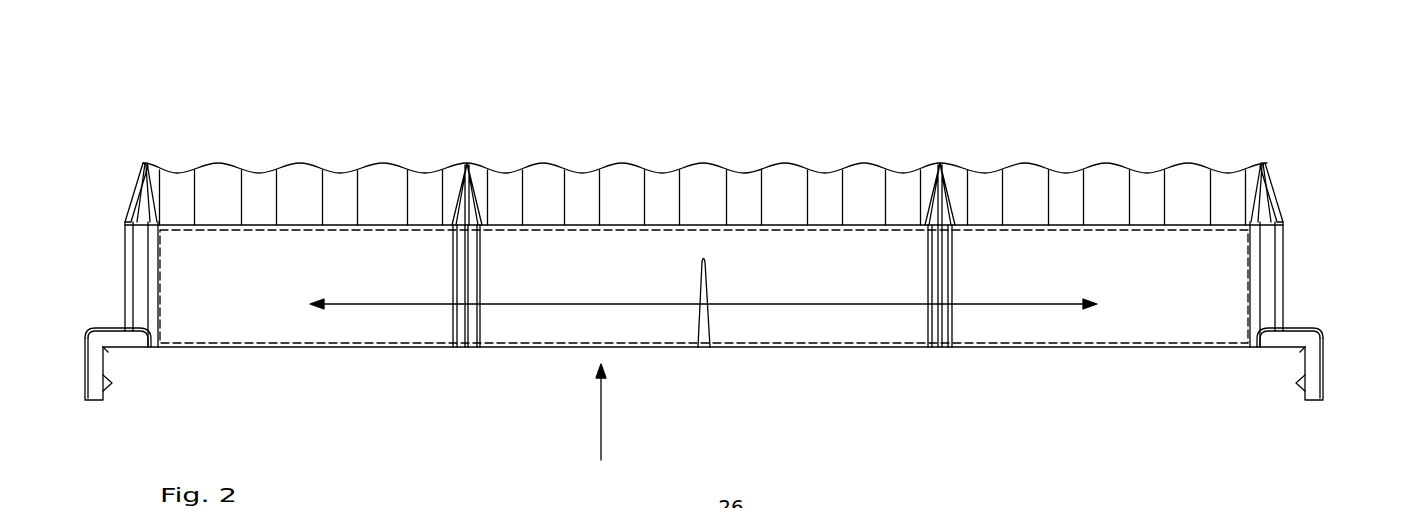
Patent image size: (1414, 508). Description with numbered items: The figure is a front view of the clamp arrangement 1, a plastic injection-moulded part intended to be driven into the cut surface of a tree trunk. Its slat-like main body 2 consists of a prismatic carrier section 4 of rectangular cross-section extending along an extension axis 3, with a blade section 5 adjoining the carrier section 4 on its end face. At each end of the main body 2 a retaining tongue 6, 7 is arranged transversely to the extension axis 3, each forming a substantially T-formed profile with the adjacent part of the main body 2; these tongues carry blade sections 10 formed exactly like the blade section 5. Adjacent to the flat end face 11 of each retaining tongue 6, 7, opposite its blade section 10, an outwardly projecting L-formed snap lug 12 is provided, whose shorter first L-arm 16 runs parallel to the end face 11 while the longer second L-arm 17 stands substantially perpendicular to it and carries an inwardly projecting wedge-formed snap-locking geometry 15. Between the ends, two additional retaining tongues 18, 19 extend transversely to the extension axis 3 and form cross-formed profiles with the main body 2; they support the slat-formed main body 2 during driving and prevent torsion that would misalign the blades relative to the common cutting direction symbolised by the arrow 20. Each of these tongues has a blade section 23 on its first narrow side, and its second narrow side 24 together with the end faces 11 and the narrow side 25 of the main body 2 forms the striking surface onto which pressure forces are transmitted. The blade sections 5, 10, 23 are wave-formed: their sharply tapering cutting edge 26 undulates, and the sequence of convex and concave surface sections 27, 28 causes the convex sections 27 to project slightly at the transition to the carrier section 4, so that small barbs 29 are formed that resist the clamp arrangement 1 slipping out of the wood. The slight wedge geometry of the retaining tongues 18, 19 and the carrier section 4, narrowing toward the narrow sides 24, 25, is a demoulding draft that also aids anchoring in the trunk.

The clamp arrangement 1 is at (1205, 104).
The main body 2 is at (1140, 320).
The extension axis 3 is at (848, 306).
The carrier section 4 is at (1115, 230).
The blade section 5 is at (622, 188).
The retaining tongue 6 is at (140, 268).
The retaining tongue 7 is at (1270, 258).
The blade section 10 is at (140, 160).
The end face 11 is at (138, 352).
The snap lug 12 is at (724, 367).
The snap-locking geometry 15 is at (108, 386).
The first L-arm 16 is at (120, 340).
The second L-arm 17 is at (91, 378).
The retaining tongue 18 is at (468, 318).
The retaining tongue 19 is at (940, 320).
The arrow 20 is at (601, 410).
The blade section 23 is at (462, 200).
The second narrow side 24 is at (466, 367).
The narrow side 25 is at (305, 350).
The cutting edge 26 is at (290, 158).
The convex surface section 27 is at (788, 193).
The concave surface section 28 is at (990, 190).
The barb 29 is at (125, 220).